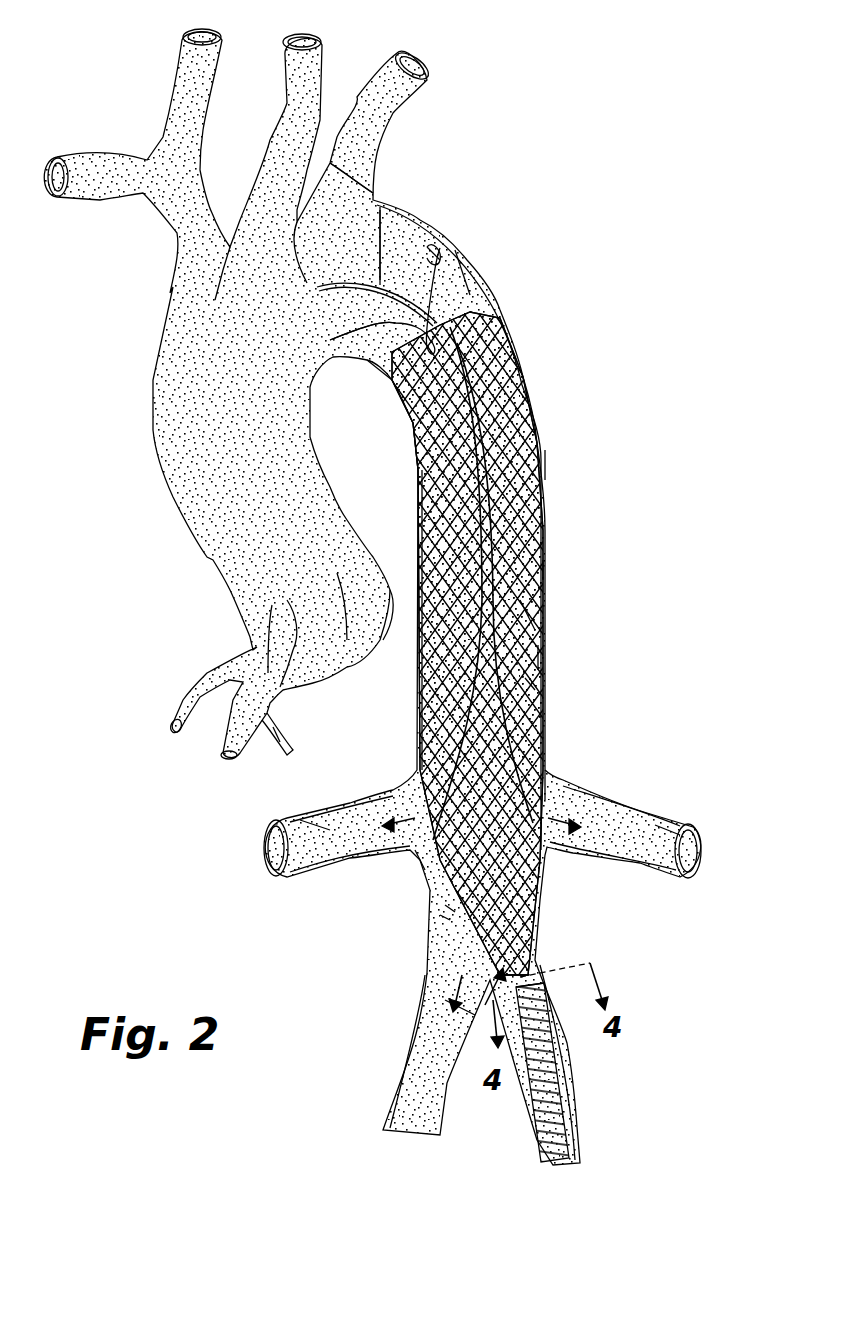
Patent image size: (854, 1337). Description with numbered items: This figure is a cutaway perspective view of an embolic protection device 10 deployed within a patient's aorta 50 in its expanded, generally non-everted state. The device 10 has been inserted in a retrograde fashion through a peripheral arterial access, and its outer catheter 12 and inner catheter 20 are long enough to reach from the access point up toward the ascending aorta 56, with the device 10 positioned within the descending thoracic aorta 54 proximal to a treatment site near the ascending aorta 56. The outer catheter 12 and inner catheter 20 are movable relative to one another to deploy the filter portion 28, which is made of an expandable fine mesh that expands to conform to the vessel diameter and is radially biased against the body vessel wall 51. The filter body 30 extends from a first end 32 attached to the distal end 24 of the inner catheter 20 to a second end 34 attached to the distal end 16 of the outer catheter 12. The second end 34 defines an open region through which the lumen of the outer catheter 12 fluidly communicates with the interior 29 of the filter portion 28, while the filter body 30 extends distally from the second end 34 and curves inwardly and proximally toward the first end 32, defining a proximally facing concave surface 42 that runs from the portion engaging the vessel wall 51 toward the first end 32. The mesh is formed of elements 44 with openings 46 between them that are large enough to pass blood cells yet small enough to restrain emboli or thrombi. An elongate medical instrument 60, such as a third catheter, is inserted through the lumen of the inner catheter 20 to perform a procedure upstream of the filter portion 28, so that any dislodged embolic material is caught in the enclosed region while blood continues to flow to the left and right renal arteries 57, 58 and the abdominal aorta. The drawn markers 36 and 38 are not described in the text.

The embolic protection device 10 is at (470, 1012).
The outer catheter 12 is at (530, 1135).
The distal end of the outer catheter 16 is at (530, 980).
The inner catheter 20 is at (470, 672).
The distal end of the inner catheter 24 is at (462, 290).
The filter portion 28 is at (447, 917).
The interior of the filter portion 29 is at (530, 683).
The filter body 30 is at (548, 783).
The first end of the filter body 32 is at (330, 340).
The second end of the filter body 34 is at (540, 963).
The aneurysm wall 36 is at (452, 908).
The renal artery junction 38 is at (417, 853).
The proximally facing concave surface 42 is at (387, 355).
The elements 44 is at (543, 650).
The openings 46 is at (515, 612).
The aorta 50 is at (560, 471).
The body vessel wall 51 is at (432, 248).
The descending thoracic aorta 54 is at (545, 570).
The ascending aorta 56 is at (373, 210).
The left renal artery 57 is at (665, 815).
The right renal artery 58 is at (320, 815).
The elongate medical instrument 60 is at (392, 240).